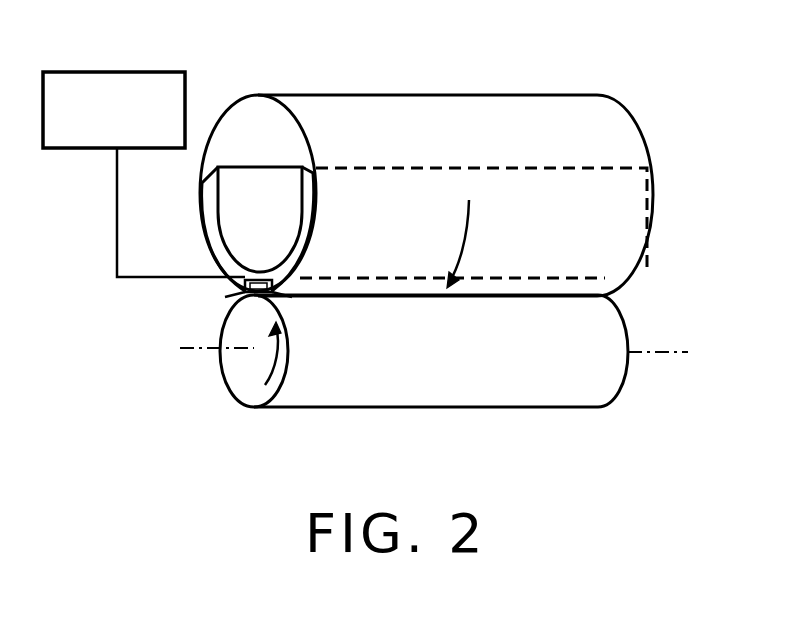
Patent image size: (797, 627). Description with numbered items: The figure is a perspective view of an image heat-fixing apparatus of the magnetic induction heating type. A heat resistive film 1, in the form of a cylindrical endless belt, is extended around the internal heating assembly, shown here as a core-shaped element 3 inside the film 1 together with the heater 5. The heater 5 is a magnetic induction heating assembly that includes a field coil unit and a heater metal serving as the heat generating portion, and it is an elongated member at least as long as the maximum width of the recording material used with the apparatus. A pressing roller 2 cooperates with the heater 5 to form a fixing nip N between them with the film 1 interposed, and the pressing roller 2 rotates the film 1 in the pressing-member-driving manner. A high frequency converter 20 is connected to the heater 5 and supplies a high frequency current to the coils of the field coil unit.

The heat resistive film 1 is at (528, 115).
The pressing roller 2 is at (530, 410).
The induction heating core 3 is at (240, 219).
The heater 5 is at (243, 292).
The high frequency converter 20 is at (142, 72).
The nip N is at (430, 299).